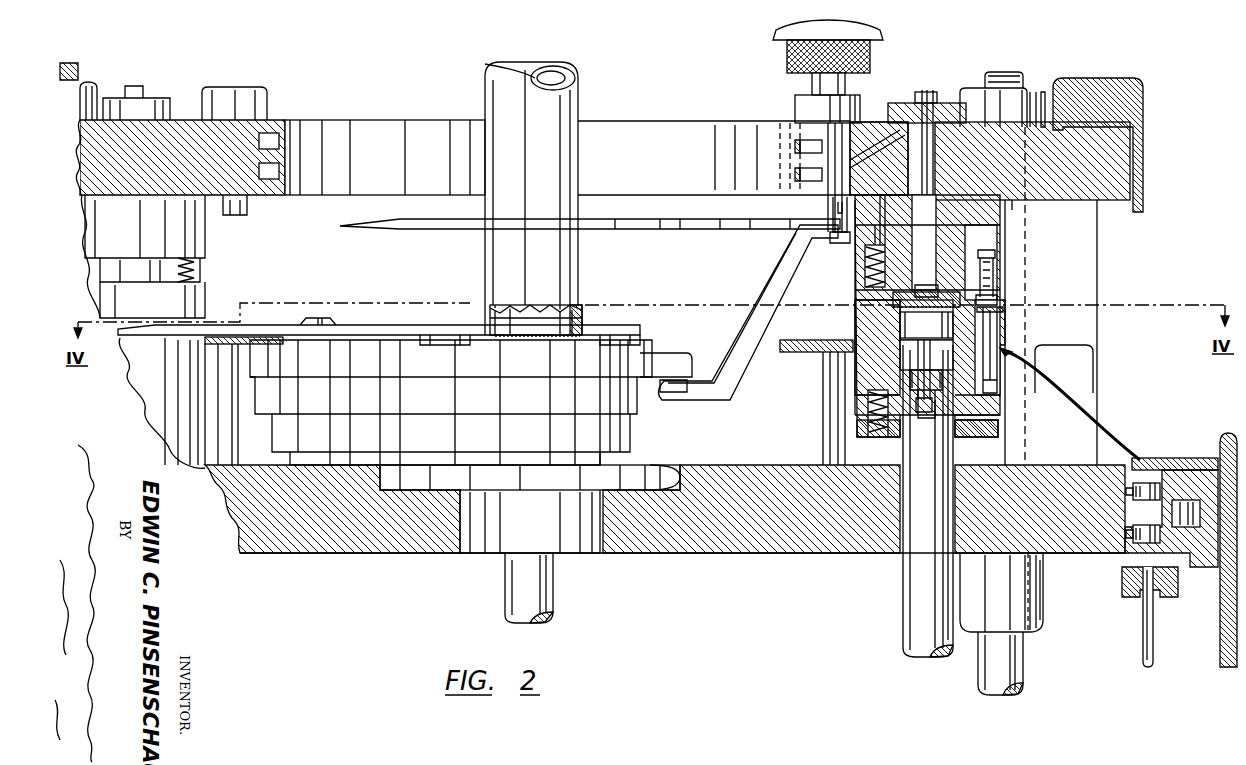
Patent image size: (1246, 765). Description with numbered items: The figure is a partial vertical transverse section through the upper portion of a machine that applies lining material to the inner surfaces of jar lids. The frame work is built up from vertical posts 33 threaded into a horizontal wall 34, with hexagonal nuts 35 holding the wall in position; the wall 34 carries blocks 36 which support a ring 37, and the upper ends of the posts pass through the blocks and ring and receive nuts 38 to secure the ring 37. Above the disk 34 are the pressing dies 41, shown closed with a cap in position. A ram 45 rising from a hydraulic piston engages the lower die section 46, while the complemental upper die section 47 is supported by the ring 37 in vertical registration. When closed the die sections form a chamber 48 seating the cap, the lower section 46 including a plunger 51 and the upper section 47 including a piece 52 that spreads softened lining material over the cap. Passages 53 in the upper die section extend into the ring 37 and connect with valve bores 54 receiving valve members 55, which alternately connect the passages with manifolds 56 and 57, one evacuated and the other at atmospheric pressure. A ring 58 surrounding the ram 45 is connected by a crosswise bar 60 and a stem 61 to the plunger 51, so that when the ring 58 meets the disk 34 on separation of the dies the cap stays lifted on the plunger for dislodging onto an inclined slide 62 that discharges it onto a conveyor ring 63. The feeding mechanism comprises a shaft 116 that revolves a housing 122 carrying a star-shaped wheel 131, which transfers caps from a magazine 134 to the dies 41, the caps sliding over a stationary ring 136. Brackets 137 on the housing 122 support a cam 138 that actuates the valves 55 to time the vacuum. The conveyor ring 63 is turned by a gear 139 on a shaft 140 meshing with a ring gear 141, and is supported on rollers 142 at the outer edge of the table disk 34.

The vertical posts 33 is at (1023, 662).
The horizontal wall 34 is at (720, 553).
The hexagonal nuts 35 is at (1043, 595).
The blocks 36 is at (1098, 280).
The ring 37 is at (1075, 208).
The nuts 38 is at (1035, 88).
The pressing dies 41 is at (235, 284).
The ram 45 is at (932, 507).
The lower die section 46 is at (856, 327).
The upper die section 47 is at (856, 266).
The chamber 48 is at (990, 300).
The plunger 51 is at (927, 339).
The piece 52 is at (897, 308).
The passages 53 is at (905, 260).
The valve bores 54 is at (843, 182).
The valve members 55 is at (838, 161).
The manifold 56 is at (795, 176).
The manifold 57 is at (795, 145).
The ring 58 is at (885, 432).
The bar 60 is at (925, 418).
The stem 61 is at (922, 400).
The inclined slide 62 is at (1075, 395).
The conveyor ring 63 is at (1185, 458).
The shaft 116 is at (512, 590).
The housing 122 is at (598, 402).
The star-shaped wheel 131 is at (378, 332).
The magazine 134 is at (560, 68).
The stationary ring 136 is at (815, 358).
The brackets 137 is at (780, 270).
The cam 138 is at (692, 229).
The gear 139 is at (1132, 590).
The shaft 140 is at (1145, 636).
The ring gear 141 is at (1204, 568).
The rollers 142 is at (1183, 527).